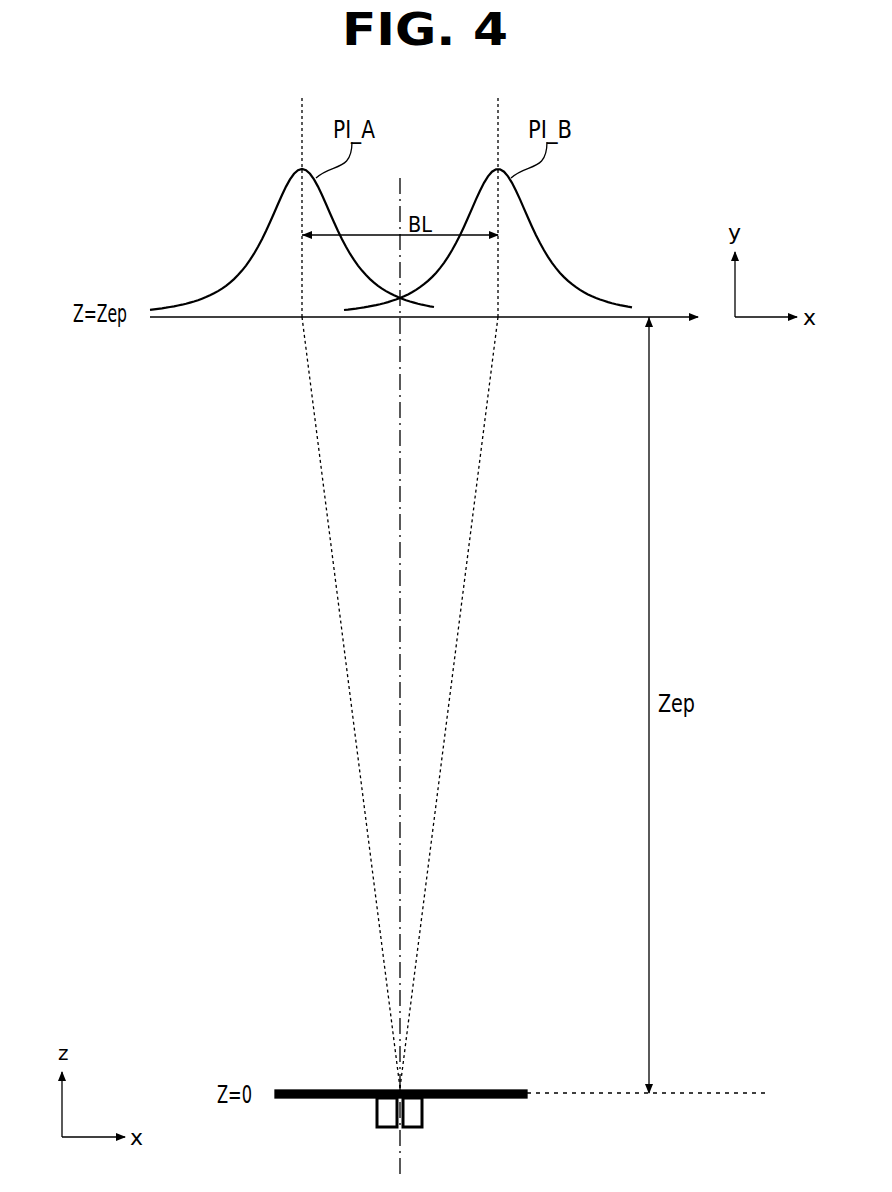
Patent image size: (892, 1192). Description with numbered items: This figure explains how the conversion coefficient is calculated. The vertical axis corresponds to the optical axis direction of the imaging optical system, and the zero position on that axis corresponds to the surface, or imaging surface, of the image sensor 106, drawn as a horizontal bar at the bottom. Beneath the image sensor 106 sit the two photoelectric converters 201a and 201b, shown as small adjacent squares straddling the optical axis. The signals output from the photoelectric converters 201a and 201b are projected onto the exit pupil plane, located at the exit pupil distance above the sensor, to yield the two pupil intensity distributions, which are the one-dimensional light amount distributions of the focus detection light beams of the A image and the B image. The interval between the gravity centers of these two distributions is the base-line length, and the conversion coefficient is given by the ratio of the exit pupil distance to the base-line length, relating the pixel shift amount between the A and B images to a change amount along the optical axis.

The image sensor 106 is at (488, 1090).
The photoelectric converter 201a is at (377, 1112).
The photoelectric converter 201b is at (422, 1112).